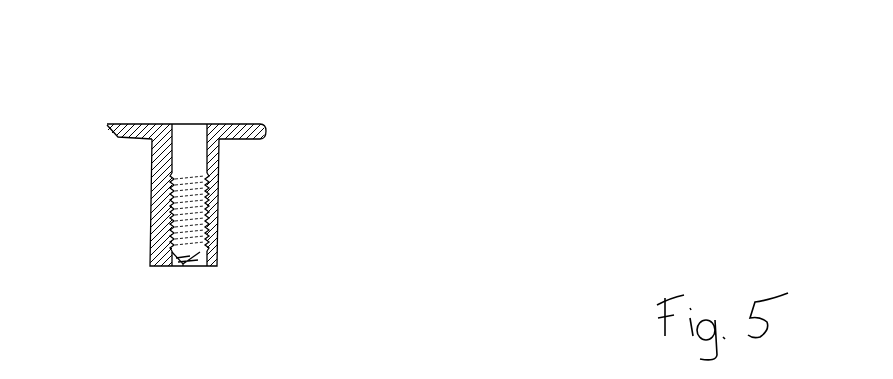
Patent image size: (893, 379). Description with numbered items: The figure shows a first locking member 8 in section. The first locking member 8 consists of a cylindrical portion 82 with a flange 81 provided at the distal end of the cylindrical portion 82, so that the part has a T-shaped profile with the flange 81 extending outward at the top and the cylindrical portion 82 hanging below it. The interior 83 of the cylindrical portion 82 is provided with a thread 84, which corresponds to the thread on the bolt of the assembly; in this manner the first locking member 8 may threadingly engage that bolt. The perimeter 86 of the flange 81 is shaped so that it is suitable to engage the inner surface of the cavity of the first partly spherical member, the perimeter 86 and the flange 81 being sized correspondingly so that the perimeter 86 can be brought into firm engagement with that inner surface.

The first locking member 8 is at (335, 167).
The flange 81 is at (248, 110).
The cylindrical portion 82 is at (228, 217).
The interior 83 is at (184, 156).
The thread 84 is at (187, 242).
The perimeter 86 is at (105, 130).